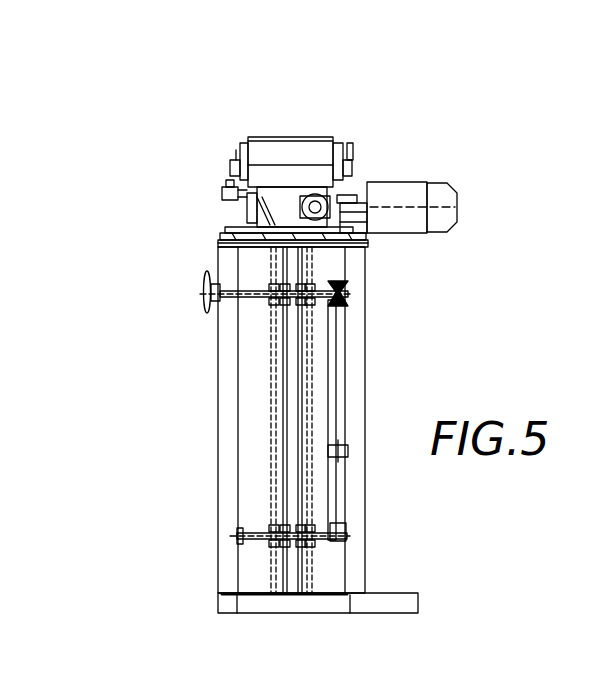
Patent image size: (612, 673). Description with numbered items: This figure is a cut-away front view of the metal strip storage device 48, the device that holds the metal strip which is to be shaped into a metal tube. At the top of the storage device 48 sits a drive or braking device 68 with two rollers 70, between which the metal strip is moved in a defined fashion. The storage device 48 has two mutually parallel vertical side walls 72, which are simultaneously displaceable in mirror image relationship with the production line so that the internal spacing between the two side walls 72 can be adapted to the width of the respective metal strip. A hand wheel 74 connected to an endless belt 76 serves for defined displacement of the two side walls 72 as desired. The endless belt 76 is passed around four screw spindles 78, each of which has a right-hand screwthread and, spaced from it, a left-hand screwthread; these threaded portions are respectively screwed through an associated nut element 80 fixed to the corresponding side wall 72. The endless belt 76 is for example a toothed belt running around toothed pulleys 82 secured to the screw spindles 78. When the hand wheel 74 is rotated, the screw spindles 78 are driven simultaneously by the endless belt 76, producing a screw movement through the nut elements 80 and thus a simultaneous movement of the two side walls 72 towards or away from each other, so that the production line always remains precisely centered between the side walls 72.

The metal strip storage device 48 is at (162, 396).
The drive or braking device 68 is at (301, 126).
The rollers 70 is at (306, 152).
The vertical side walls 72 is at (283, 408).
The hand wheel 74 is at (198, 290).
The endless belt 76 is at (340, 397).
The screw spindles 78 is at (270, 300).
The nut elements 80 is at (270, 292).
The toothed pulleys 82 is at (347, 283).